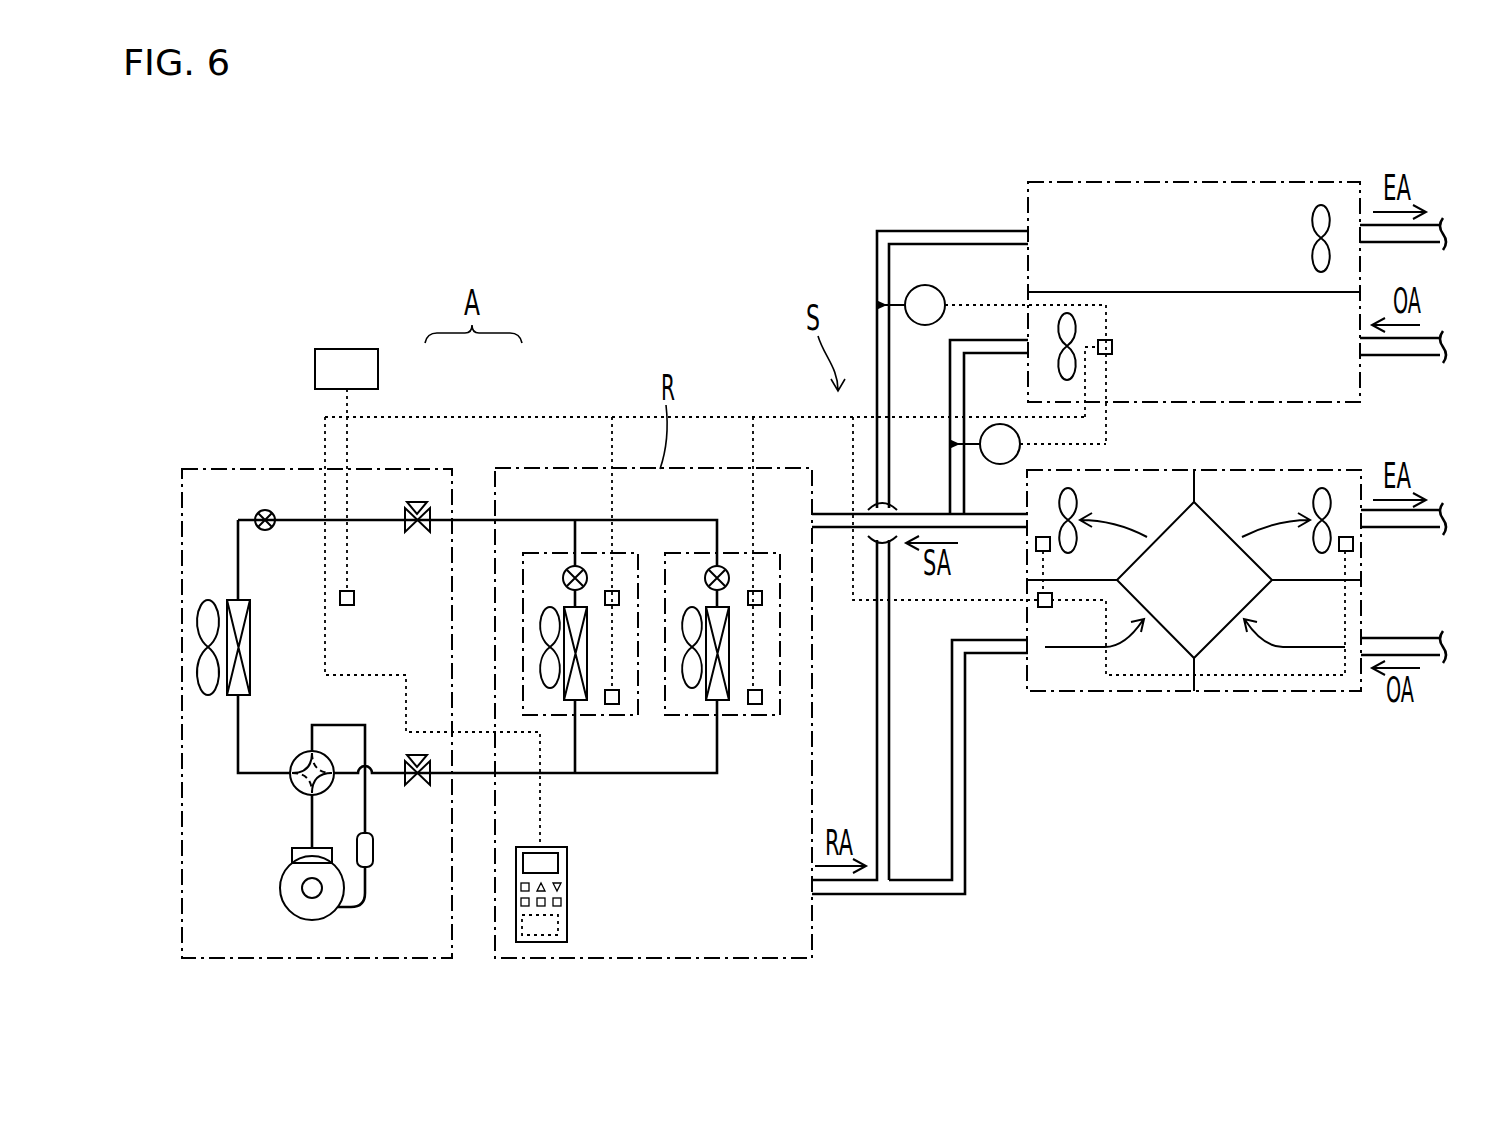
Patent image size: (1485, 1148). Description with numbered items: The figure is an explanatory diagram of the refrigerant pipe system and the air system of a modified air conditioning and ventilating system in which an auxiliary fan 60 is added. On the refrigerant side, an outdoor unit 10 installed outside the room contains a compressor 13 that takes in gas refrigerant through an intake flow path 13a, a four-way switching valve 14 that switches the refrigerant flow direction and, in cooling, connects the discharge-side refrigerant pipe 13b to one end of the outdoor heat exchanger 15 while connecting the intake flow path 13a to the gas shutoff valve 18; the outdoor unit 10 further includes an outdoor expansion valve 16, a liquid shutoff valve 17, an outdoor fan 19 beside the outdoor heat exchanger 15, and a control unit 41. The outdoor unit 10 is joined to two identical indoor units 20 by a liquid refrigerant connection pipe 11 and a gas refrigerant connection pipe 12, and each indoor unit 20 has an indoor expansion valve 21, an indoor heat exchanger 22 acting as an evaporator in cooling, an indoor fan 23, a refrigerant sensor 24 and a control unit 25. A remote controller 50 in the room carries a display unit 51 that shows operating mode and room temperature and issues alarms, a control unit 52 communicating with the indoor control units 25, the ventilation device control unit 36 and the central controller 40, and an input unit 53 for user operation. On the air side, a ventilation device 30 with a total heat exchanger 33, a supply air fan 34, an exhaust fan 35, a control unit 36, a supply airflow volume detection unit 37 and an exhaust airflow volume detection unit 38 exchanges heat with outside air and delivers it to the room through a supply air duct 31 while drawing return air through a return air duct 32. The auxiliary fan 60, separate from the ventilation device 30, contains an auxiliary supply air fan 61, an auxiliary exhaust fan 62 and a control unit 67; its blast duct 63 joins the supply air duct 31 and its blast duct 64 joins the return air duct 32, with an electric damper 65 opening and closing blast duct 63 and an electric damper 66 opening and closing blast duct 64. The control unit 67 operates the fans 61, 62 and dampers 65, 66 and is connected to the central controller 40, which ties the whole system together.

The outdoor unit 10 is at (415, 469).
The liquid refrigerant connection pipe 11 is at (470, 520).
The gas refrigerant connection pipe 12 is at (687, 773).
The compressor 13 is at (280, 888).
The intake flow path 13a is at (366, 887).
The refrigerant pipe 13b is at (310, 822).
The four-way switching valve 14 is at (300, 757).
The outdoor heat exchanger 15 is at (252, 647).
The outdoor expansion valve 16 is at (268, 531).
The liquid shutoff valve 17 is at (417, 533).
The gas shutoff valve 18 is at (417, 785).
The outdoor fan 19 is at (208, 598).
The indoor unit 20 is at (553, 553).
The indoor expansion valve 21 is at (586, 565).
The indoor heat exchanger 22 is at (580, 702).
The indoor fan 23 is at (540, 633).
The refrigerant sensor 24 is at (620, 699).
The control unit 25 is at (614, 591).
The ventilation device 30 is at (1296, 691).
The supply air duct 31 is at (832, 514).
The return air duct 32 is at (965, 792).
The total heat exchanger 33 is at (1222, 525).
The supply air fan 34 is at (1080, 494).
The exhaust fan 35 is at (1328, 495).
The control unit 36 is at (1043, 608).
The supply airflow volume detection unit 37 is at (1036, 544).
The exhaust airflow volume detection unit 38 is at (1353, 544).
The central controller 40 is at (348, 349).
The control unit 41 is at (352, 606).
The remote controller 50 is at (555, 847).
The display unit 51 is at (560, 858).
The control unit 52 is at (567, 930).
The input unit 53 is at (568, 880).
The auxiliary fan 60 is at (1198, 182).
The auxiliary supply air fan 61 is at (1070, 313).
The auxiliary exhaust fan 62 is at (1322, 205).
The blast duct 63 is at (987, 340).
The blast duct 64 is at (897, 231).
The electric damper 65 is at (978, 463).
The electric damper 66 is at (931, 271).
The control unit 67 is at (1112, 347).